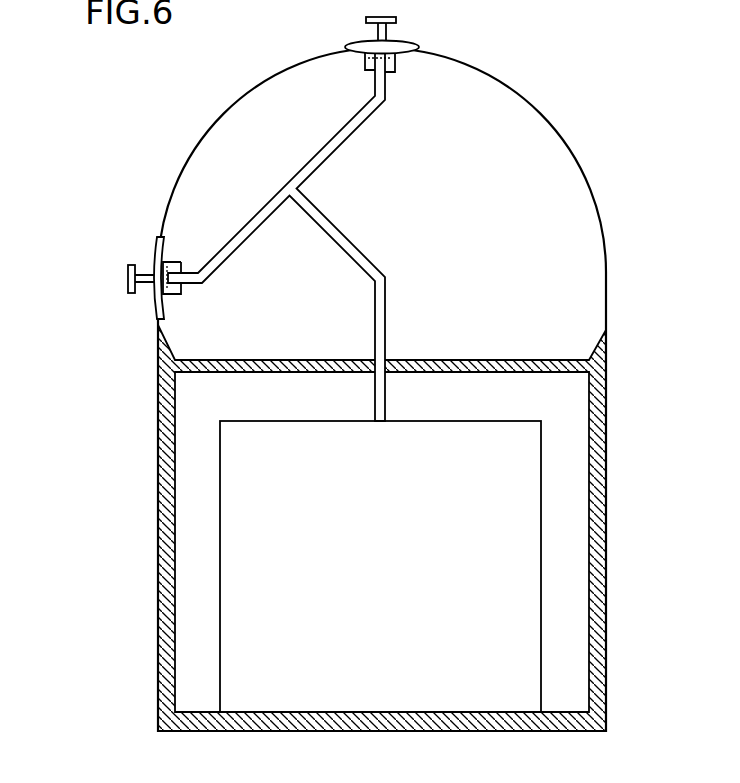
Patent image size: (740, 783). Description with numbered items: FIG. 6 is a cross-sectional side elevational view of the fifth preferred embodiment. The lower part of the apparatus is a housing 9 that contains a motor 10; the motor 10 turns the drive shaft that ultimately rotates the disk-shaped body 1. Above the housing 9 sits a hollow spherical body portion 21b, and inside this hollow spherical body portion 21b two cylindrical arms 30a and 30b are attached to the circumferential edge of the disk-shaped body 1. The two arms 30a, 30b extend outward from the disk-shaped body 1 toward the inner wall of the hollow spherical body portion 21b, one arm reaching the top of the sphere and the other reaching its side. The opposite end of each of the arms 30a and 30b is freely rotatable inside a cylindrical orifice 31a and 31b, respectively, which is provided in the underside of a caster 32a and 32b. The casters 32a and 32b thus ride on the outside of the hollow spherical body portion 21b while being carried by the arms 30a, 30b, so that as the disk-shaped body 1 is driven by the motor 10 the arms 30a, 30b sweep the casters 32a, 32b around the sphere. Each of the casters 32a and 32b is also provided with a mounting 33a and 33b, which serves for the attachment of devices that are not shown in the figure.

The disk-shaped body 1 is at (313, 232).
The housing 9 is at (607, 466).
The motor 10 is at (533, 588).
The hollow spherical body portion 21b is at (528, 98).
The cylindrical arm 30a is at (313, 232).
The cylindrical arm 30b is at (187, 285).
The cylindrical orifice 31a is at (396, 63).
The cylindrical orifice 31b is at (172, 295).
The caster 32a is at (414, 42).
The caster 32b is at (156, 252).
The mounting 33a is at (364, 20).
The mounting 33b is at (127, 279).